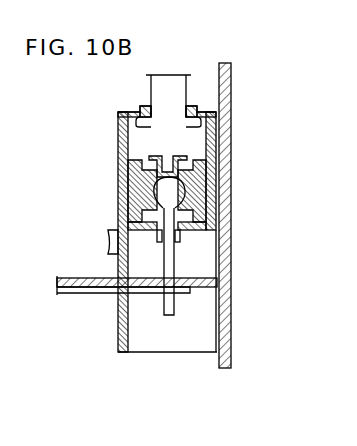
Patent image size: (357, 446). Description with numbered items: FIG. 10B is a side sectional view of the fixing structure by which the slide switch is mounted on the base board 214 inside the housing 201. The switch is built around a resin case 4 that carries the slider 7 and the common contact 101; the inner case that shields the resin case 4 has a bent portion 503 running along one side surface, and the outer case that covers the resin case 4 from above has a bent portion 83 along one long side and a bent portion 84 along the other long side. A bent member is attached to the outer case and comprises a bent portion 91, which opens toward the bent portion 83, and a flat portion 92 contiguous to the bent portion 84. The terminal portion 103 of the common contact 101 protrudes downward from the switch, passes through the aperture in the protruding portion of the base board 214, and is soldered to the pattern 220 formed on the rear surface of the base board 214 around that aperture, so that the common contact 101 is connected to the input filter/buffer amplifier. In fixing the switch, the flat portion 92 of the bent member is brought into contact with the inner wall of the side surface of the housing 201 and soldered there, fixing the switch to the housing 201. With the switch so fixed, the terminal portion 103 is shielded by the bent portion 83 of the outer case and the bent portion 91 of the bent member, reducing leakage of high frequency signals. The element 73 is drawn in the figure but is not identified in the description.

The slider 7 is at (162, 97).
The bent portion 83 is at (118, 122).
The bent portion 503 is at (120, 146).
The common contact 101 is at (156, 192).
The resin case 4 is at (122, 212).
The base board 214 is at (90, 278).
The pattern 220 is at (72, 294).
The valve seat 73 is at (178, 157).
The bent portion 84 is at (212, 150).
The housing 201 is at (227, 177).
The flat portion 92 is at (220, 237).
The bent portion 91 is at (140, 345).
The terminal portion 103 is at (168, 320).